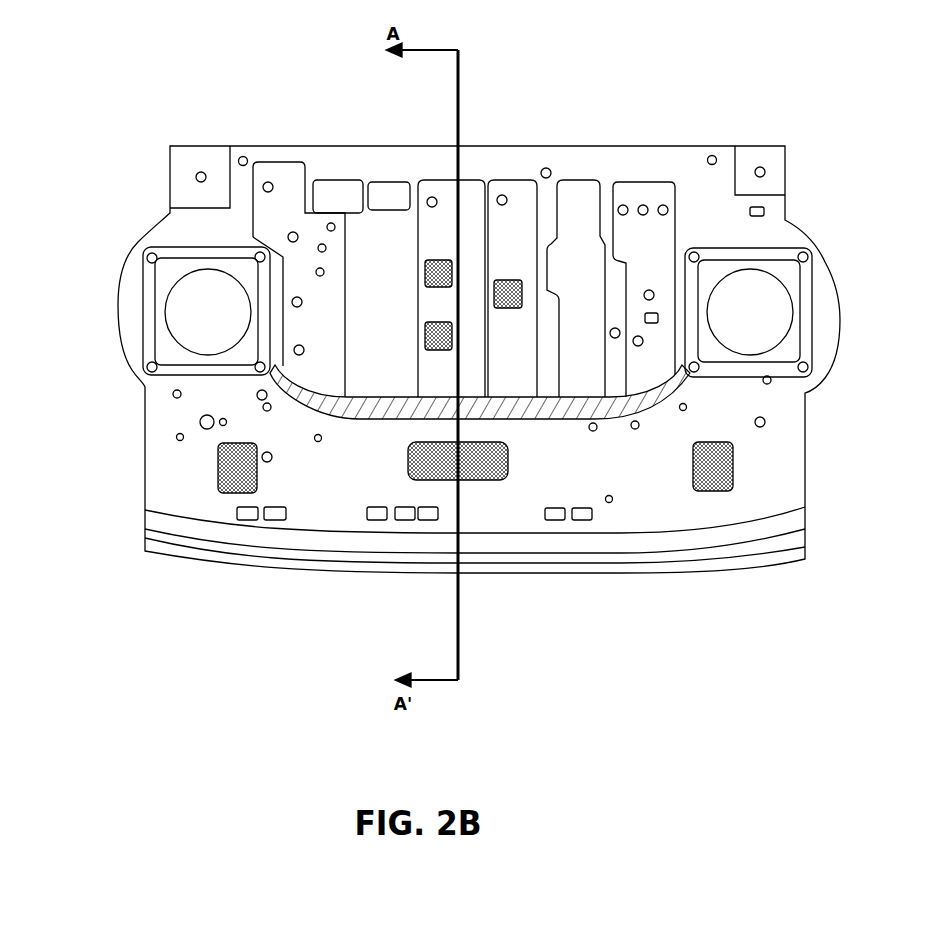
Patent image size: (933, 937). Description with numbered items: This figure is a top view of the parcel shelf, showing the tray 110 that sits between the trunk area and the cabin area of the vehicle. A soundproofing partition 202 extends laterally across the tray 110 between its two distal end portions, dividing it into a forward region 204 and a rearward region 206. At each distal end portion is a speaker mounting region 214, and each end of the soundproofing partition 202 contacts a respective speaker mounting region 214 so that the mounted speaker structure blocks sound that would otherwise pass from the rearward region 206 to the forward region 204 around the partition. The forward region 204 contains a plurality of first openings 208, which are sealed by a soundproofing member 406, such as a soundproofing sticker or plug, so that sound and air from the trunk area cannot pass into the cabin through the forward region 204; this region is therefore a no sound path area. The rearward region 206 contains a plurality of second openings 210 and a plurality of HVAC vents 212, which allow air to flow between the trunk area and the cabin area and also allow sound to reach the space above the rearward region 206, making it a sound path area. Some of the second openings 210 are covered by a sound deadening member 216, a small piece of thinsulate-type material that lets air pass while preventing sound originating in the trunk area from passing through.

The tray 110 is at (710, 147).
The soundproofing partition 202 is at (632, 402).
The forward region 204 is at (380, 270).
The rearward region 206 is at (508, 507).
The first openings 208 is at (322, 248).
The second openings 210 is at (200, 423).
The HVAC vents 212 is at (432, 515).
The speaker mounting regions 214 is at (180, 315).
The sound deadening member 216 is at (235, 468).
The soundproofing member 406 is at (433, 337).